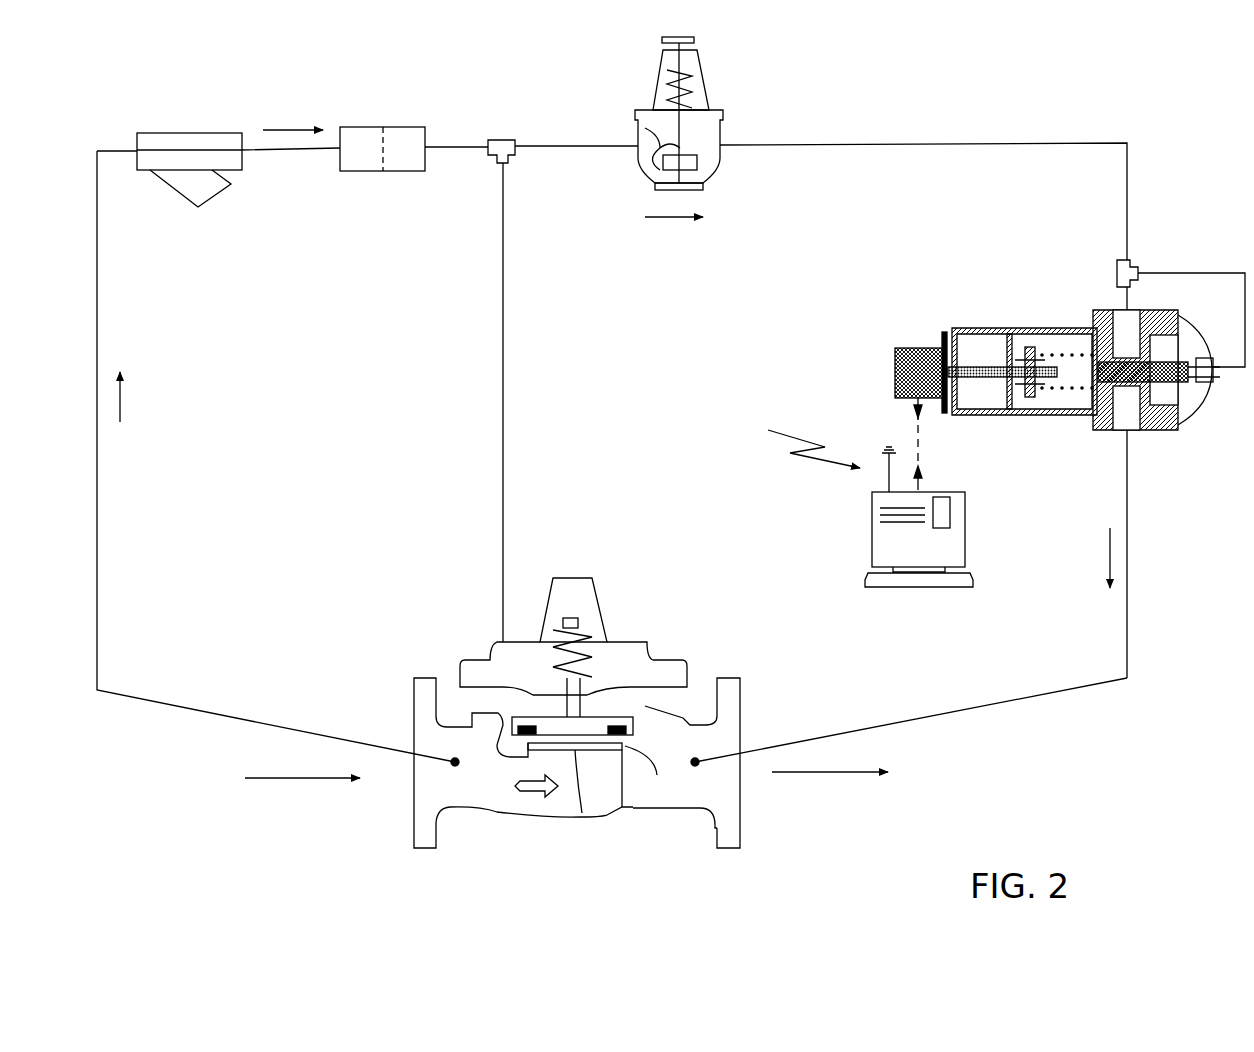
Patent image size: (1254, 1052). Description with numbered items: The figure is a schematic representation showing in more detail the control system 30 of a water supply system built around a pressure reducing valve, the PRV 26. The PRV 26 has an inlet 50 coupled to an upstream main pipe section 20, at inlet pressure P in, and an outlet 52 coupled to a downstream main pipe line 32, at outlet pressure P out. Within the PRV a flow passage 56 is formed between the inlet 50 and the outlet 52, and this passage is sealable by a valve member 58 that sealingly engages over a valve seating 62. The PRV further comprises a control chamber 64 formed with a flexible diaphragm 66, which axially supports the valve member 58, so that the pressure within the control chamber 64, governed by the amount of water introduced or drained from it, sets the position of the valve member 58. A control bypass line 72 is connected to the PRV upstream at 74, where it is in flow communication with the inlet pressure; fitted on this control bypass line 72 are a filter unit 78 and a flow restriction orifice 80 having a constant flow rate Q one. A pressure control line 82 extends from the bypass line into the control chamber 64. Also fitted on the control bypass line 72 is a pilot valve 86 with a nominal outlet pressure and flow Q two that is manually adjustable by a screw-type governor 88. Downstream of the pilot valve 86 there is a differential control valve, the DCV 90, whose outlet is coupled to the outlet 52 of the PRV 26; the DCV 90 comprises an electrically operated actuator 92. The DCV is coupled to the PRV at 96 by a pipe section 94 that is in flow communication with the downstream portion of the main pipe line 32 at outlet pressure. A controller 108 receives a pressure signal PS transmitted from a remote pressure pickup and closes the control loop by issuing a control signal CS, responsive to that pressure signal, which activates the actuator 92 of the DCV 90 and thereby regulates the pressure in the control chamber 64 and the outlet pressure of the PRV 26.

The upstream main pipe section 20 is at (280, 780).
The PRV 26 is at (497, 812).
The control system 30 is at (1157, 248).
The downstream main pipe line 32 is at (830, 772).
The inlet 50 is at (436, 722).
The outlet 52 is at (740, 790).
The flow passage 56 is at (582, 813).
The valve member 58 is at (600, 725).
The valve seating 62 is at (657, 775).
The control chamber 64 is at (610, 657).
The flexible diaphragm 66 is at (507, 660).
The control bypass line 72 is at (98, 520).
The upstream connection point 74 is at (457, 766).
The filter unit 78 is at (178, 192).
The flow restriction orifice 80 is at (396, 171).
The pressure control line 82 is at (504, 422).
The pilot valve 86 is at (687, 136).
The screw-type governor 88 is at (665, 42).
The differential control valve 90 is at (1157, 462).
The electrically operated actuator 92 is at (918, 347).
The pipe section 94 is at (1129, 612).
The downstream connection point 96 is at (693, 767).
The controller 108 is at (965, 528).